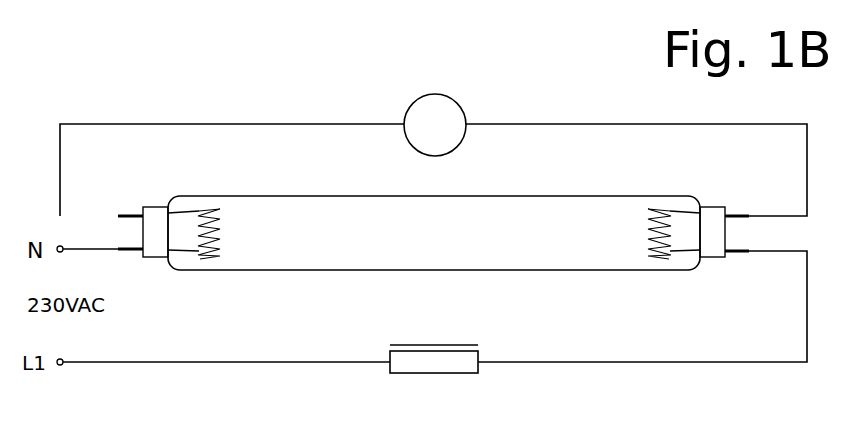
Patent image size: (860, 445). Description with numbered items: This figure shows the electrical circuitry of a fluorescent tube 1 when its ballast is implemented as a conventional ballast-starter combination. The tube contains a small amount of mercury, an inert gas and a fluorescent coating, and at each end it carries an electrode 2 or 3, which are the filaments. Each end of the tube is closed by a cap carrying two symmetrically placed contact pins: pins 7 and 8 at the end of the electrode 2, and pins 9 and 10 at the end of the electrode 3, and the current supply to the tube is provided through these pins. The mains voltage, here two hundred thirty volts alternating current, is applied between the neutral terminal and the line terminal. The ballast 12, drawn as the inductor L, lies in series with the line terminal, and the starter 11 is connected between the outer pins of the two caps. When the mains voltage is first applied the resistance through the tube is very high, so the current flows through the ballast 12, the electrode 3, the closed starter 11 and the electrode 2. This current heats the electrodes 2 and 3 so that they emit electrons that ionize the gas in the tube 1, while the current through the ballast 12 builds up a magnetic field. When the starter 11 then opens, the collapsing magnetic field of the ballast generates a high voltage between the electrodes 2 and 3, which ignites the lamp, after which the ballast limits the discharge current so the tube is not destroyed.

The fluorescent lamp tube 1 is at (538, 280).
The electrode 2 is at (192, 251).
The electrode 3 is at (681, 251).
The contact pin 7 is at (128, 214).
The contact pin 8 is at (128, 252).
The contact pin 9 is at (742, 214).
The contact pin 10 is at (742, 254).
The starter 11 is at (457, 104).
The electronic ballast 12 is at (437, 374).